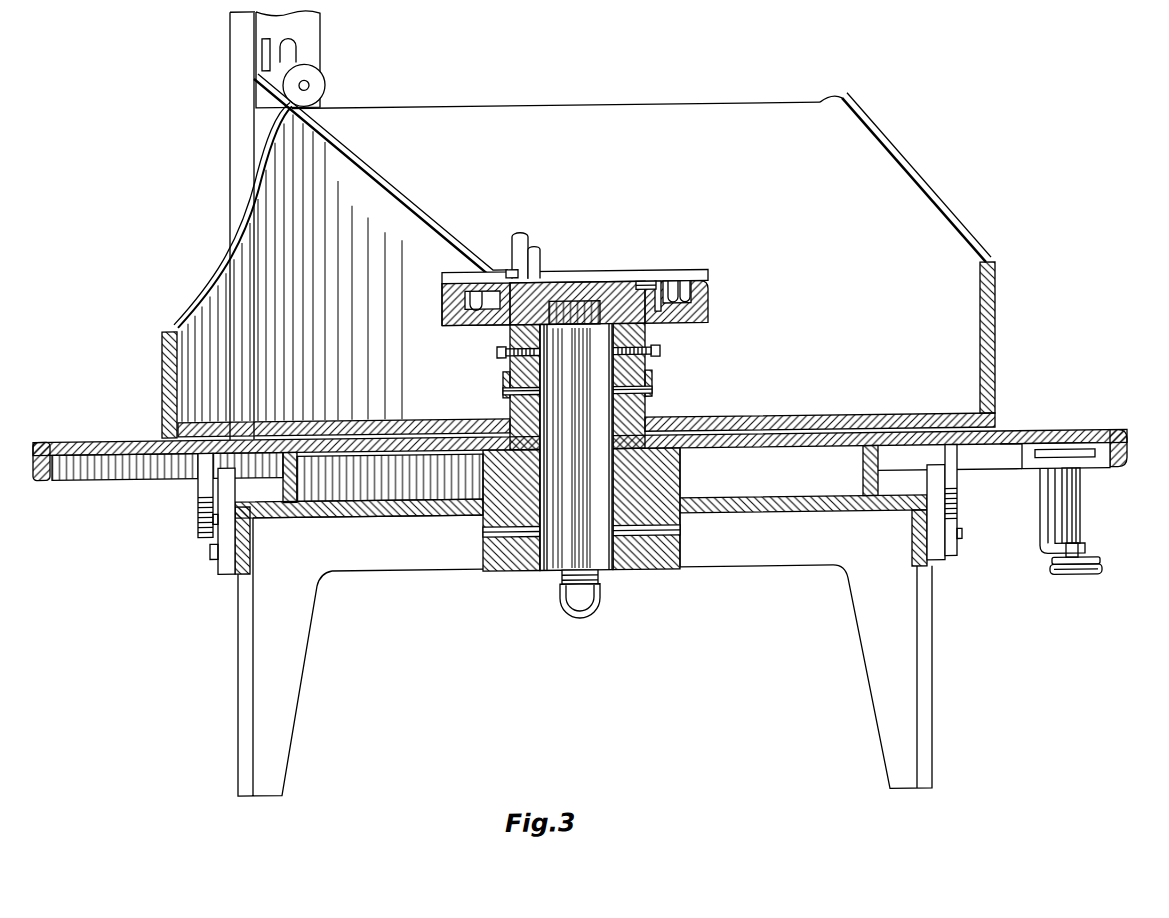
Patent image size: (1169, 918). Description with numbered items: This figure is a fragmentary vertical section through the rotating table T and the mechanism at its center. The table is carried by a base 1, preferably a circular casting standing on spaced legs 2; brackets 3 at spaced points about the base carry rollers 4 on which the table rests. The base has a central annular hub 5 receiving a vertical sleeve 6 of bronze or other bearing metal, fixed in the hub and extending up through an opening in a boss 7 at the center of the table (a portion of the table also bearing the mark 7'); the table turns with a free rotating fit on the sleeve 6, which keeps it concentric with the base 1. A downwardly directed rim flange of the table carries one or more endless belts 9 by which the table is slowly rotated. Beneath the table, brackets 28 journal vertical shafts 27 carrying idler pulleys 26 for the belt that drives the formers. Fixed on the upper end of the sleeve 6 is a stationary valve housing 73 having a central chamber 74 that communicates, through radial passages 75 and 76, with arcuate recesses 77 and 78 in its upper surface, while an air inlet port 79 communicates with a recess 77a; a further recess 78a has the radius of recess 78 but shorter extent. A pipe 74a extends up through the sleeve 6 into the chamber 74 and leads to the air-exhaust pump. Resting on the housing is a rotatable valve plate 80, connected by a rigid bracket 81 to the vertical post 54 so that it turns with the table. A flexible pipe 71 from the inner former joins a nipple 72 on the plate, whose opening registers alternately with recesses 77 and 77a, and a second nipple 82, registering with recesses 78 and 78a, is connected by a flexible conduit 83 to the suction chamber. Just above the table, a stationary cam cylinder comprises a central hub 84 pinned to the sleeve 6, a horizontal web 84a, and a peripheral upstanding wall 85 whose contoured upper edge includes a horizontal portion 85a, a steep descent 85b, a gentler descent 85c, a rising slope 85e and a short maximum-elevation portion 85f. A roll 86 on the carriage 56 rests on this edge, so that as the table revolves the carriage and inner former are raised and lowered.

The base 1 is at (352, 517).
The legs 2 is at (240, 683).
The brackets 3 is at (222, 545).
The rollers 4 is at (198, 508).
The central annular hub 5 is at (684, 494).
The vertical sleeve 6 is at (615, 578).
The boss 7 is at (580, 426).
The table plate extension 7' is at (1055, 407).
The endless belt 9 is at (1127, 447).
The idler pulleys 26 is at (1068, 588).
The vertical shafts 27 is at (1082, 526).
The brackets 28 is at (1040, 530).
The vertical post 54 is at (246, 138).
The carriage 56 is at (320, 38).
The flexible pipe 71 is at (518, 240).
The nipple 72 is at (510, 276).
The valve housing 73 is at (710, 300).
The central chamber 74 is at (586, 306).
The pipe 74a is at (578, 580).
The radial passage 75 is at (566, 308).
The radial passage 76 is at (486, 326).
The arcuate recess 77 is at (455, 280).
The arcuate recess 77a is at (658, 288).
The arcuate recess 78 is at (466, 308).
The arcuate recess 78a is at (690, 290).
The air inlet port 79 is at (660, 332).
The rotatable valve plate 80 is at (646, 288).
The rigid bracket 81 is at (366, 168).
The second nipple 82 is at (548, 280).
The flexible conduit 83 is at (537, 253).
The central hub 84 is at (656, 386).
The horizontal web 84a is at (856, 425).
The peripheral upstanding wall 85 is at (996, 336).
The horizontal cam edge portion 85a is at (752, 110).
The steep downward cam edge portion 85b is at (238, 236).
The lesser-slope downward cam edge portion 85c is at (172, 330).
The rising cam edge portion 85e is at (932, 207).
The maximum-elevation cam edge portion 85f is at (840, 102).
The roll 86 is at (326, 86).